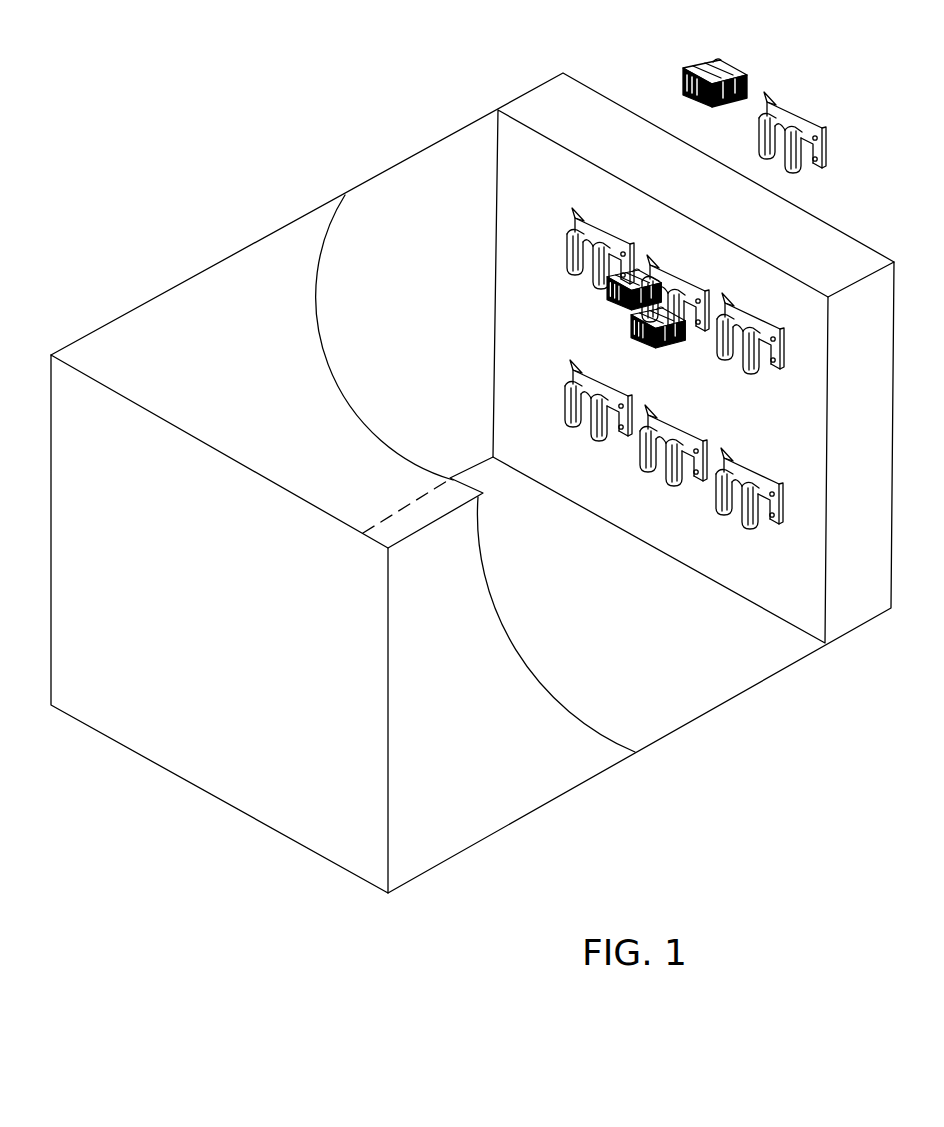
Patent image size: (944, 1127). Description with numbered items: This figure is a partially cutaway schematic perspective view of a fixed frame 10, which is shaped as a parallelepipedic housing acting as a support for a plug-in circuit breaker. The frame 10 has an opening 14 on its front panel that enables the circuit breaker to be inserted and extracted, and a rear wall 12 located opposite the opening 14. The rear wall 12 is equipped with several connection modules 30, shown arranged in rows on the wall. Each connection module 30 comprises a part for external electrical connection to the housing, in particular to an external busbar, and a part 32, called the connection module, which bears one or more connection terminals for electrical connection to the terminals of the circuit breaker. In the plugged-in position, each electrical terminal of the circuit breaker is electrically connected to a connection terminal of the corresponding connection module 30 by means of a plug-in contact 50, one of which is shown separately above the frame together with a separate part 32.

The fixed frame 10 is at (462, 778).
The rear wall 12 is at (798, 567).
The opening 14 is at (193, 723).
The connection module 30 is at (782, 526).
The connection module part 32 is at (813, 128).
The plug-in contact 50 is at (696, 73).